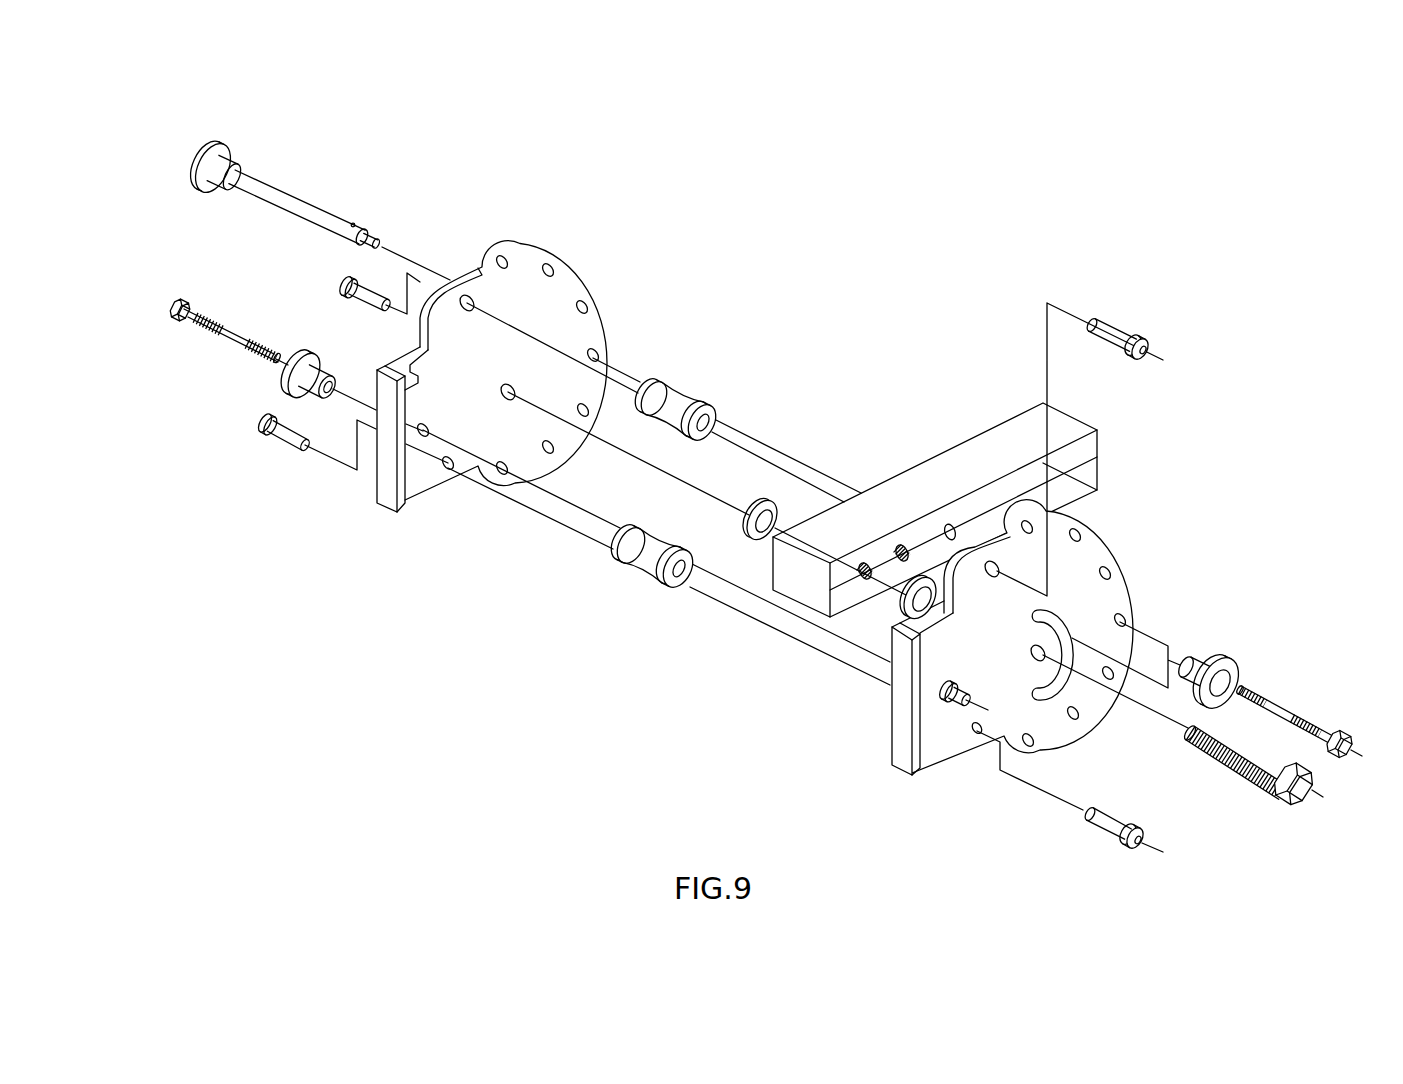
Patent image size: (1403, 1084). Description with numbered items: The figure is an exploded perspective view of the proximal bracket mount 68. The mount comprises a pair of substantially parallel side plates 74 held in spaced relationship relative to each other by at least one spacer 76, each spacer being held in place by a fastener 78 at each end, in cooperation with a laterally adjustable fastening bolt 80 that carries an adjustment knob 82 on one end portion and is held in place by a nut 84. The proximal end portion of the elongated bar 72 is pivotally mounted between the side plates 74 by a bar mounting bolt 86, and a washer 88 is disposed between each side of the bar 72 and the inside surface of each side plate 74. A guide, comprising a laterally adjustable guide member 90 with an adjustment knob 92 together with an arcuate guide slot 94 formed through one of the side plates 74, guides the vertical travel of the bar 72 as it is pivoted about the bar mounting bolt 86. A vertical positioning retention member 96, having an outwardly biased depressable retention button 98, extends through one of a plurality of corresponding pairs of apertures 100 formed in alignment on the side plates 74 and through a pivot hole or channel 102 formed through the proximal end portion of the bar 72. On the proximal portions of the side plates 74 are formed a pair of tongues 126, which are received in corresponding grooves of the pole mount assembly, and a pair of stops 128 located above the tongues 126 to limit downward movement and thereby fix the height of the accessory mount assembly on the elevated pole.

The proximal bracket mount 68 is at (721, 236).
The elongated member or bar 72 is at (923, 480).
The side plate 74 is at (557, 307).
The spacer 76 is at (688, 403).
The fastener 78 is at (345, 280).
The laterally adjustable fastening member or bolt 80 is at (228, 342).
The adjustment knob 82 is at (285, 380).
The fastener or nut 84 is at (943, 703).
The bar mounting member or bolt 86 is at (1243, 773).
The washer or spacer 88 is at (773, 503).
The laterally adjustable guide member 90 is at (1277, 710).
The adjustment knob 92 is at (1213, 660).
The arcuate guide slot 94 is at (1076, 624).
The vertical positioning retention member 96 is at (315, 215).
The outwardly biased depressable retention button 98 is at (360, 218).
The aperture 100 is at (549, 252).
The pivot hole or channel 102 is at (900, 543).
The tongue 126 is at (387, 488).
The stop 128 is at (392, 362).